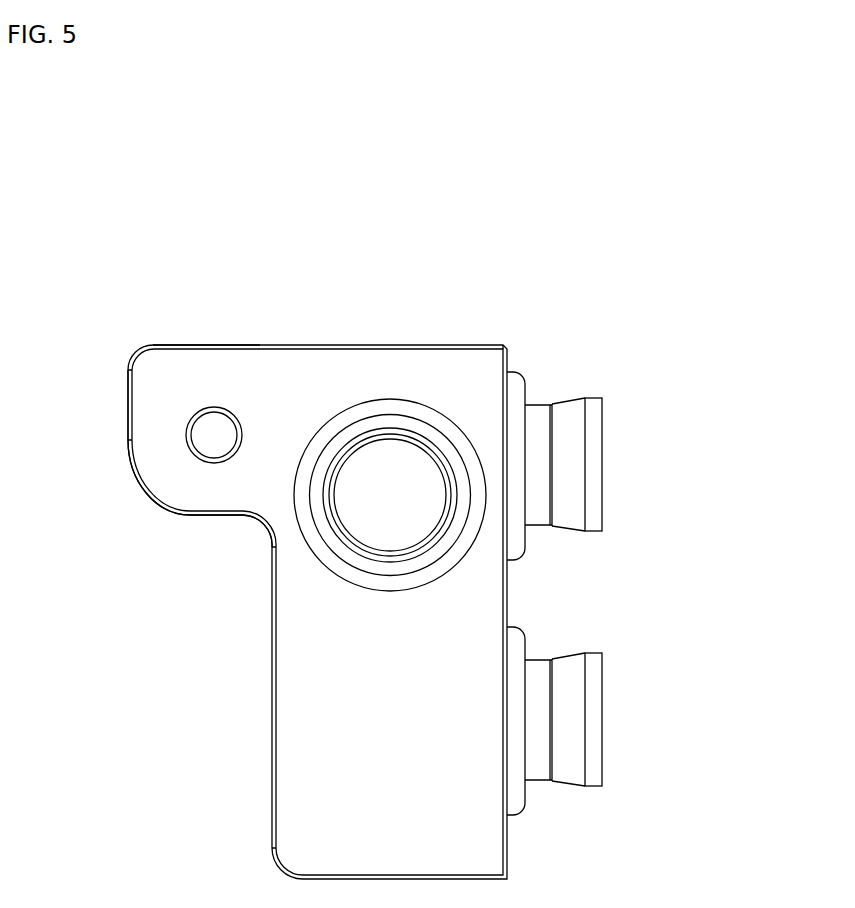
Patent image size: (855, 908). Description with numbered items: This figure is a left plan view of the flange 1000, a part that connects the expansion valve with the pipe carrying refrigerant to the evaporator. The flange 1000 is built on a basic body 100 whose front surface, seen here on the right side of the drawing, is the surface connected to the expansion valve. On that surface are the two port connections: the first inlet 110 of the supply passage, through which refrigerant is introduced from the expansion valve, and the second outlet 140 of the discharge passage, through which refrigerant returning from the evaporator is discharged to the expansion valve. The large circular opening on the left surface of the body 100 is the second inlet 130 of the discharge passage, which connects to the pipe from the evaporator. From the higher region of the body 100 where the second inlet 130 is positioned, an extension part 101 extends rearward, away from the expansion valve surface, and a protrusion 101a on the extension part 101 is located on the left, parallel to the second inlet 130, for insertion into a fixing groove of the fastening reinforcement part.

The flange 1000 is at (550, 288).
The body 100 is at (465, 370).
The extension part 101 is at (232, 355).
The protrusion 101a is at (213, 435).
The second inlet 130 is at (388, 420).
The second outlet 140 is at (592, 460).
The first inlet 110 is at (592, 727).